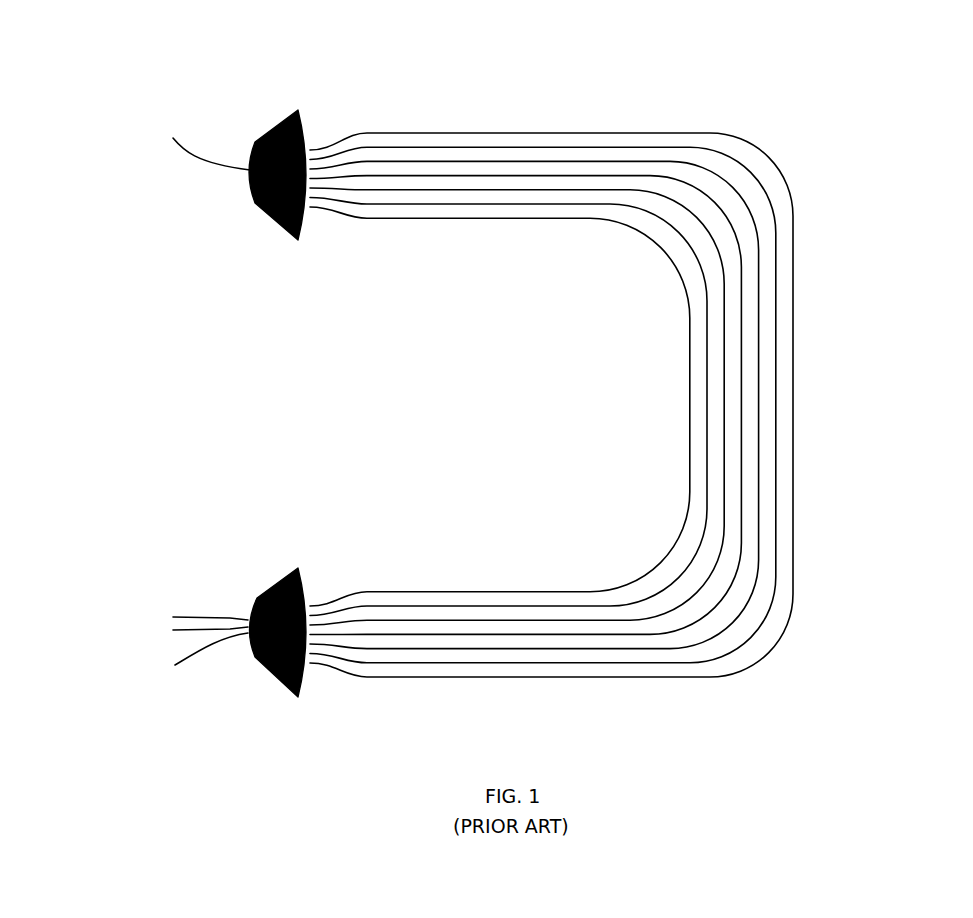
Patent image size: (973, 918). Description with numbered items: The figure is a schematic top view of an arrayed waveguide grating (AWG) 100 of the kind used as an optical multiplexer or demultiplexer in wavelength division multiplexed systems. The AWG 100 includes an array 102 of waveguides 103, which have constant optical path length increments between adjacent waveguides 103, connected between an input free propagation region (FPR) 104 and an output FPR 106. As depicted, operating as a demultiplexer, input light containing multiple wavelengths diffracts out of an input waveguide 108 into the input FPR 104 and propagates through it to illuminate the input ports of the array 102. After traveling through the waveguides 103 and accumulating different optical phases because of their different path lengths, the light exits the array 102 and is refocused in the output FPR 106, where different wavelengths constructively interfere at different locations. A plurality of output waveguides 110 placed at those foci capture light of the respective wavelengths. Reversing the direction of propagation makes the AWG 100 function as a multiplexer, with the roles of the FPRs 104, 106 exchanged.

The arrayed waveguide grating 100 is at (760, 96).
The array of waveguides 102 is at (815, 493).
The waveguides 103 is at (779, 175).
The input free propagation region 104 is at (277, 223).
The output free propagation region 106 is at (288, 575).
The input waveguide 108 is at (189, 156).
The output waveguides 110 is at (195, 611).